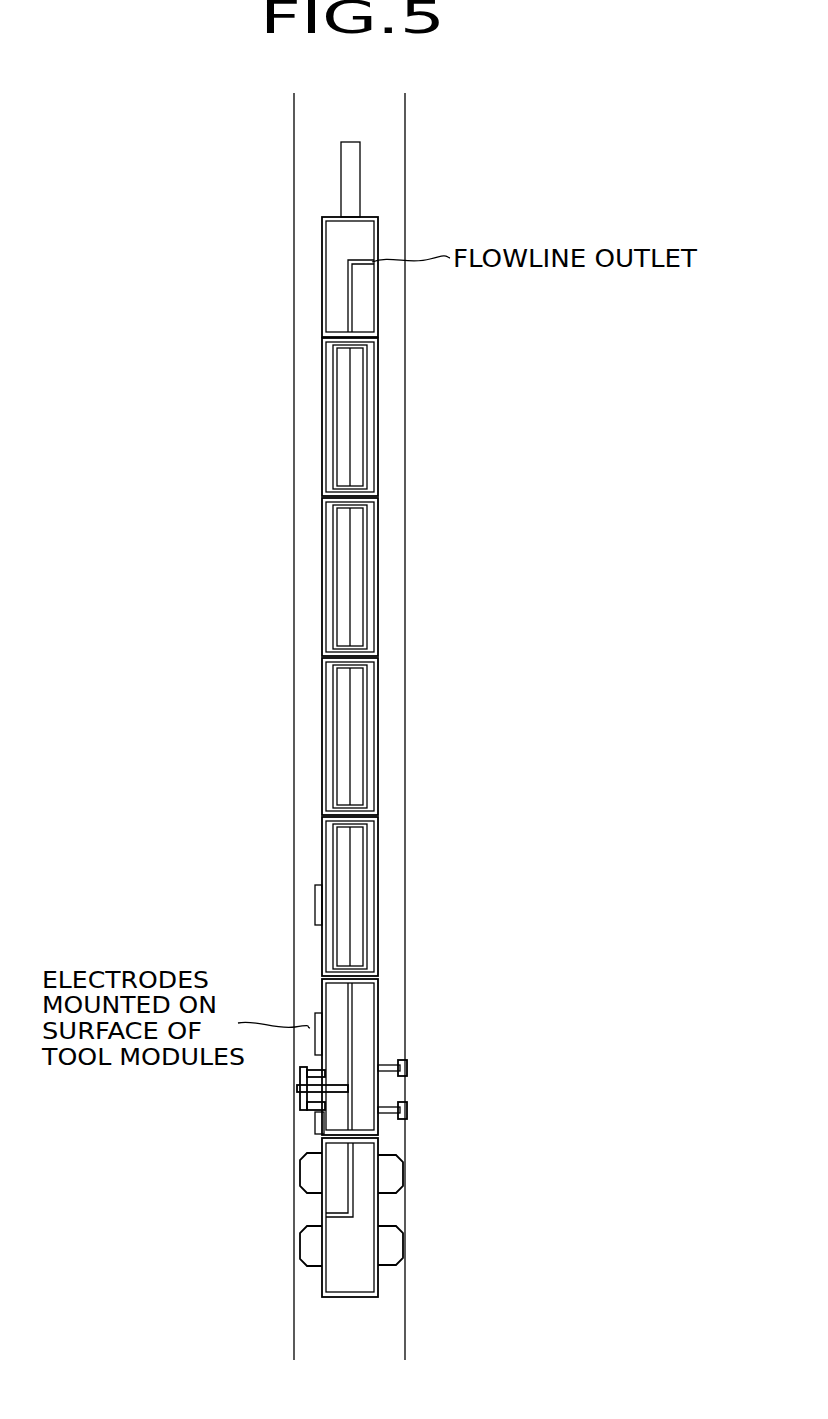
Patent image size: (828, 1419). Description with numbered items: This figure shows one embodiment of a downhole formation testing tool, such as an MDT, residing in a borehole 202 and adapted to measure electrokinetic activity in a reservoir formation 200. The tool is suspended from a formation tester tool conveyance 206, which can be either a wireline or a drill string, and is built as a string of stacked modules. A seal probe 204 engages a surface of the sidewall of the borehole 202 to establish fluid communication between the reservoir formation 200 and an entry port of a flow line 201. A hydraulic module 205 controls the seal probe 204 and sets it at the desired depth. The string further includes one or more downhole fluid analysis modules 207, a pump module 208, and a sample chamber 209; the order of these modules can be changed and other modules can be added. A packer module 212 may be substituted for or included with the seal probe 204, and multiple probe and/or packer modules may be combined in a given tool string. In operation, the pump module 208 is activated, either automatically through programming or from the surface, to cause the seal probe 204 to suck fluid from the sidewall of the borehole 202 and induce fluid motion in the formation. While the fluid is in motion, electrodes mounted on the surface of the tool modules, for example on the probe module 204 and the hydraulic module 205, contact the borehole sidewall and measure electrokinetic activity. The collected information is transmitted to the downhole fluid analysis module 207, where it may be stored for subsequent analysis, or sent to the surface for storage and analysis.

The reservoir formation 200 is at (295, 1105).
The flow line 201 is at (357, 997).
The borehole 202 is at (370, 1333).
The seal probe 204 is at (380, 1040).
The hydraulic module 205 is at (380, 878).
The formation tester tool conveyance 206 is at (360, 173).
The downhole fluid analysis module 207 is at (380, 740).
The pump module 208 is at (380, 593).
The sample chamber 209 is at (380, 420).
The packer module 212 is at (408, 1169).